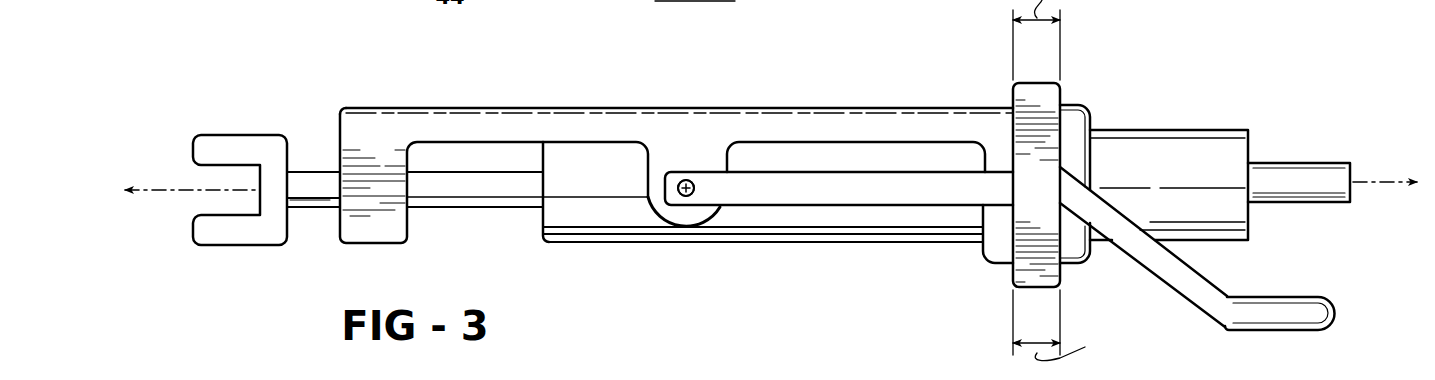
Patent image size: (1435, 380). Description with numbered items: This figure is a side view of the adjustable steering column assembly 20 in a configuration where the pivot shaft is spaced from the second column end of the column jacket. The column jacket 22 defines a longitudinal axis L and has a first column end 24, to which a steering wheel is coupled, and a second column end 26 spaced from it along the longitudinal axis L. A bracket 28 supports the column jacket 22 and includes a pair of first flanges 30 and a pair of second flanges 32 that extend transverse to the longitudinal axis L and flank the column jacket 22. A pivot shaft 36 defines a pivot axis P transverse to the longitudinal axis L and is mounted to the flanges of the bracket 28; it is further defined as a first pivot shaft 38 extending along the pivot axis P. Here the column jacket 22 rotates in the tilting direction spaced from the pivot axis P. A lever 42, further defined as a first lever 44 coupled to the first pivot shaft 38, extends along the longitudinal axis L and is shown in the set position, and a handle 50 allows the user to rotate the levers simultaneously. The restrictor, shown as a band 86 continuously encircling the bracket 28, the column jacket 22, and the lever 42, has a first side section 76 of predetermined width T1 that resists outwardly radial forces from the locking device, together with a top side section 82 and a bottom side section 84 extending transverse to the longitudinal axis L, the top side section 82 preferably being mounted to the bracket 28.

The adjustable steering column assembly 20 is at (253, 93).
The column jacket 22 is at (1180, 130).
The first column end 24 is at (1285, 163).
The second column end 26 is at (308, 192).
The bracket 28 is at (687, 122).
The first flanges 30 is at (1072, 158).
The second flanges 32 is at (653, 178).
The pivot shaft 36 is at (643, 253).
The first pivot shaft 38 is at (695, 188).
The lever 42 is at (892, 262).
The first lever 44 is at (820, 188).
The handle 50 is at (1300, 308).
The first side section 76 is at (1047, 218).
The top side section 82 is at (1040, 82).
The bottom side section 84 is at (1040, 289).
The band 86 is at (1012, 97).
The pivot axis P is at (686, 197).
The predetermined width T1 is at (1072, 181).
The longitudinal axis L is at (1380, 186).